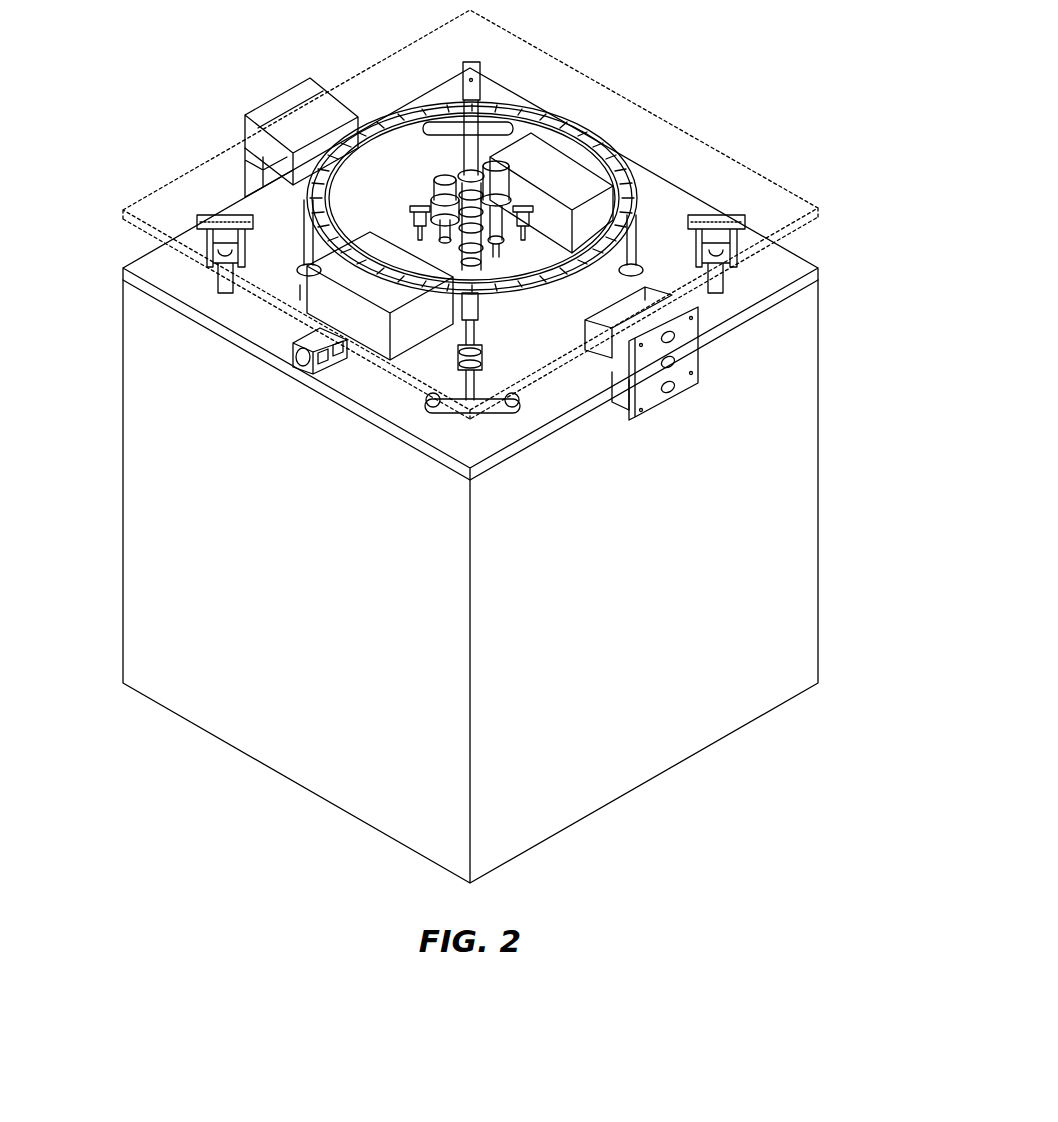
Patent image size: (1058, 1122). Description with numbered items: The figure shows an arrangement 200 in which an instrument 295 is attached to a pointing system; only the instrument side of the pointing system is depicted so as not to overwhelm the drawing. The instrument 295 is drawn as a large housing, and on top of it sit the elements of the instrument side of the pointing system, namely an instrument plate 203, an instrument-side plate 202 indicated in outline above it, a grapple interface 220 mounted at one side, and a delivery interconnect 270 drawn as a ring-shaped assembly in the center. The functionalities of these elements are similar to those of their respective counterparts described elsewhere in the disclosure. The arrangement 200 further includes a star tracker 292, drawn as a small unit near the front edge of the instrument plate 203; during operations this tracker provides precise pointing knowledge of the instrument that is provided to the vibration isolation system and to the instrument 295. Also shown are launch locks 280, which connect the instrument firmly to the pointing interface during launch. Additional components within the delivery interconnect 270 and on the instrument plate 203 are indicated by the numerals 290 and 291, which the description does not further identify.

The arrangement 200 is at (168, 836).
The instrument-side plate 202 is at (647, 110).
The instrument plate 203 is at (793, 270).
The grapple interface 220 is at (690, 368).
The delivery interconnect 270 is at (639, 199).
The launch locks 280 is at (461, 152).
The valve assembly 290 is at (508, 169).
The sensor 291 is at (306, 293).
The star tracker 292 is at (291, 352).
The instrument 295 is at (770, 612).